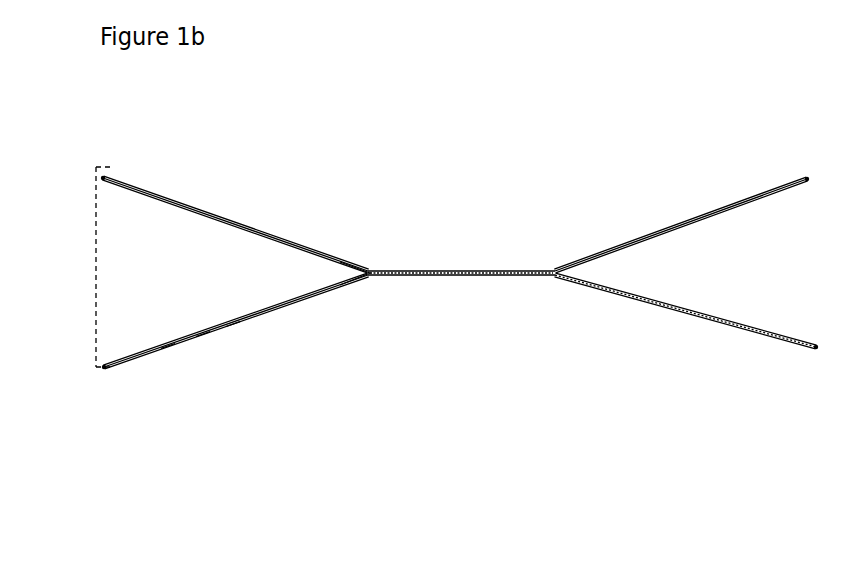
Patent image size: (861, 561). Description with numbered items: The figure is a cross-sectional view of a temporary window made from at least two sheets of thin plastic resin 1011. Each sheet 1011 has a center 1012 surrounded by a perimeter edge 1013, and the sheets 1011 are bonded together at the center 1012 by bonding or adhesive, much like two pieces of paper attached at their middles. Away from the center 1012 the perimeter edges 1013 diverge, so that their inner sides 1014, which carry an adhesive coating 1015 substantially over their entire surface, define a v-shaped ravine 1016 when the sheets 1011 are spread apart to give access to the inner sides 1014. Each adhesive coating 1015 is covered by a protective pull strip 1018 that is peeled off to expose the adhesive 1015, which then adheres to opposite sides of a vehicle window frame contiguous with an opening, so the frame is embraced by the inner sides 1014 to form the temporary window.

The sheet of thin plastic resin 1011 is at (340, 256).
The center 1012 is at (506, 272).
The perimeter edge 1013 is at (155, 195).
The inner side 1014 is at (233, 327).
The adhesive coating 1015 is at (168, 342).
The v-shaped ravine 1016 is at (95, 268).
The protective pull strip 1018 is at (203, 333).